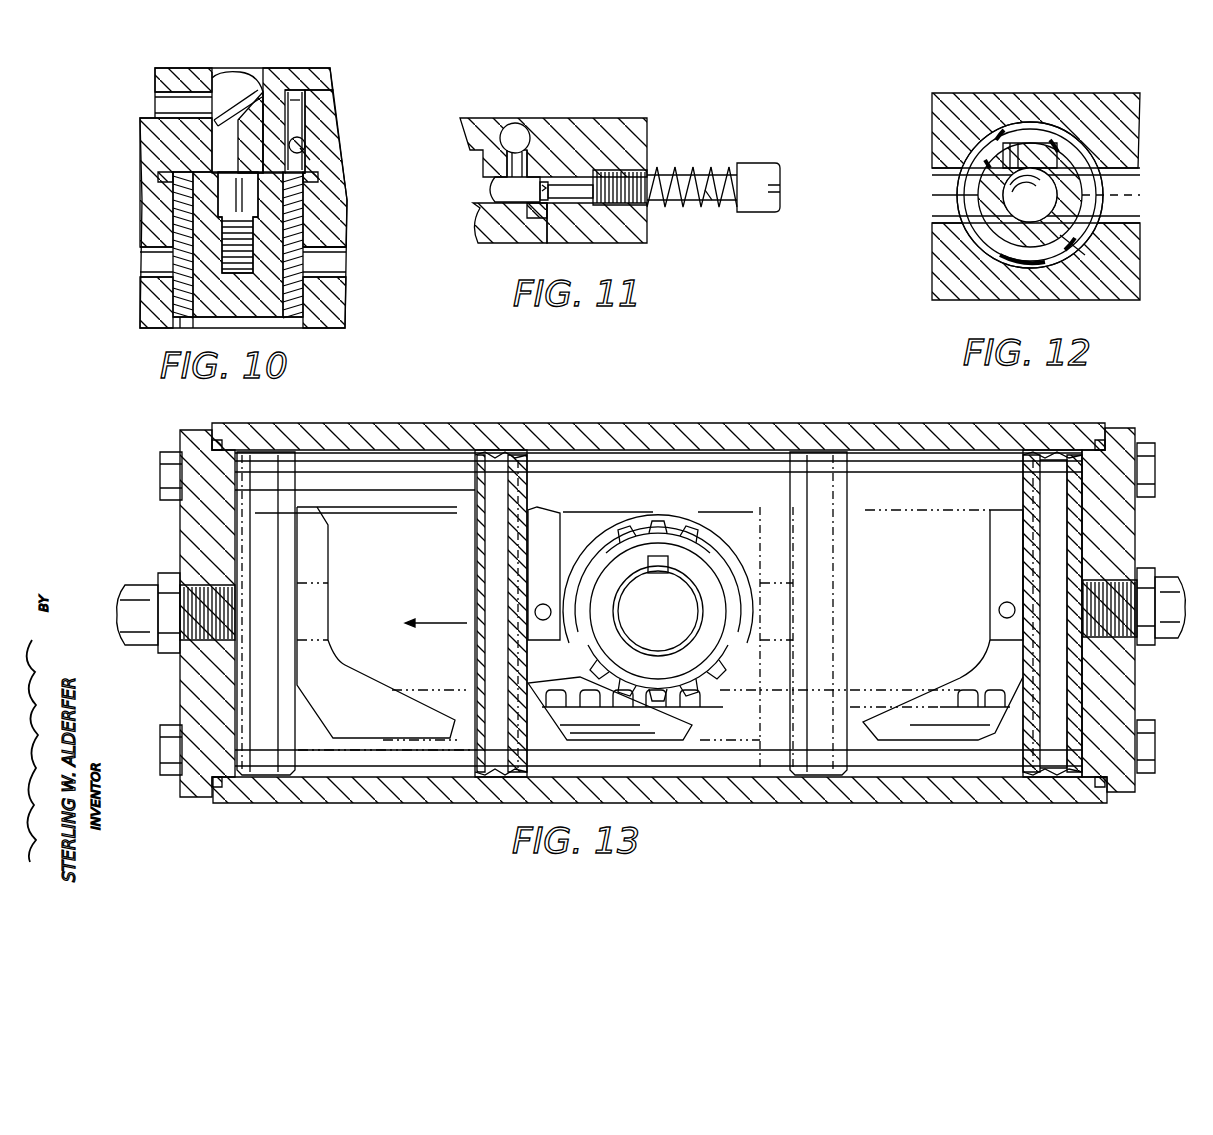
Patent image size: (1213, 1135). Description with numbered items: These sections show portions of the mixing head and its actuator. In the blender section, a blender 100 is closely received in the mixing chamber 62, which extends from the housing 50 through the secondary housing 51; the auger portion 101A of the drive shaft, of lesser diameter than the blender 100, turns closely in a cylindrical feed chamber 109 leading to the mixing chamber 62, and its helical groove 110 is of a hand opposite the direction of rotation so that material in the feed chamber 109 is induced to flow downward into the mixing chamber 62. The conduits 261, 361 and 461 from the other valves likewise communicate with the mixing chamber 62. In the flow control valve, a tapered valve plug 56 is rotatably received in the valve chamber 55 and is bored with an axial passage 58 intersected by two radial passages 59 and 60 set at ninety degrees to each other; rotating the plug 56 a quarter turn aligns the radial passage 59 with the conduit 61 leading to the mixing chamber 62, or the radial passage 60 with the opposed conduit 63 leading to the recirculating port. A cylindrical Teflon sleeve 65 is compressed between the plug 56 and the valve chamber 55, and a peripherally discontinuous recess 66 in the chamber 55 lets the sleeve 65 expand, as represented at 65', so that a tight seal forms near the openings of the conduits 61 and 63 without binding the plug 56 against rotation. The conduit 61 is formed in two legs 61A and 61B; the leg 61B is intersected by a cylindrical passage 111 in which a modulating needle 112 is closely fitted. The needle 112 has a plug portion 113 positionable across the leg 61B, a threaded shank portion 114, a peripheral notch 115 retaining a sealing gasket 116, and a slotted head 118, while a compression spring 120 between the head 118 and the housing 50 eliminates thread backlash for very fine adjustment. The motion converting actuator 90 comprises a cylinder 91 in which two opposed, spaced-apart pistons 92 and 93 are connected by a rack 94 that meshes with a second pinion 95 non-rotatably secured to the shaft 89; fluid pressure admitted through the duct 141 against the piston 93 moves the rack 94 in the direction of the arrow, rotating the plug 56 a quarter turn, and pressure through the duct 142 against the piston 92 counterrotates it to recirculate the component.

In FIG. 10, the housing 50 is at (160, 72).
In FIG. 11, the housing 50 is at (625, 135).
In FIG. 12, the housing 50 is at (1110, 122).
In FIG. 10, the secondary housing 51 is at (148, 312).
In FIG. 12, the valve chamber 55 is at (1085, 245).
In FIG. 12, the tapered flow control valve plug 56 is at (980, 195).
In FIG. 12, the axial passage 58 is at (1028, 190).
In FIG. 12, the radial passage 59 is at (1050, 145).
In FIG. 12, the radial passage 60 is at (1070, 160).
In FIG. 12, the conduit 61 is at (935, 185).
In FIG. 10, the leg of conduit 61A is at (320, 105).
In FIG. 11, the leg of conduit 61A is at (518, 133).
In FIG. 10, the leg of conduit 61B is at (298, 125).
In FIG. 11, the leg of conduit 61B is at (505, 165).
In FIG. 10, the mixing chamber 62 is at (310, 235).
In FIG. 12, the opposed conduit 63 is at (1128, 205).
In FIG. 12, the cylindrical Teflon sleeve 65 is at (934, 139).
In FIG. 12, the expanded sleeve portion 65' is at (992, 192).
In FIG. 12, the peripherally discontinuous recess 66 is at (1027, 123).
In FIG. 13, the shaft 89 is at (688, 611).
In FIG. 13, the motion converting actuator 90 is at (716, 408).
In FIG. 13, the cylinder 91 is at (843, 428).
In FIG. 13, the piston 92 is at (495, 544).
In FIG. 13, the piston 93 is at (1060, 687).
In FIG. 13, the rack 94 is at (805, 720).
In FIG. 13, the second pinion 95 is at (712, 548).
In FIG. 10, the blender 100 is at (238, 250).
In FIG. 11, the blender 100 is at (490, 232).
In FIG. 10, the auger portion 101A is at (222, 162).
In FIG. 10, the cylindrical feed chamber 109 is at (243, 67).
In FIG. 10, the helical groove 110 is at (215, 124).
In FIG. 10, the cylindrical passage 111 is at (305, 164).
In FIG. 11, the cylindrical passage 111 is at (570, 203).
In FIG. 10, the modulating needle 112 is at (306, 150).
In FIG. 11, the modulating needle 112 is at (714, 218).
In FIG. 11, the plug portion 113 is at (500, 192).
In FIG. 11, the threaded shank portion 114 is at (632, 170).
In FIG. 11, the peripheral notch 115 is at (550, 183).
In FIG. 11, the sealing gasket 116 is at (543, 185).
In FIG. 11, the head 118 is at (757, 172).
In FIG. 11, the compression spring 120 is at (695, 205).
In FIG. 13, the duct 141 is at (1172, 585).
In FIG. 13, the duct 142 is at (140, 590).
In FIG. 10, the conduit 261 is at (160, 104).
In FIG. 10, the conduit 361 is at (325, 274).
In FIG. 10, the conduit 461 is at (140, 264).